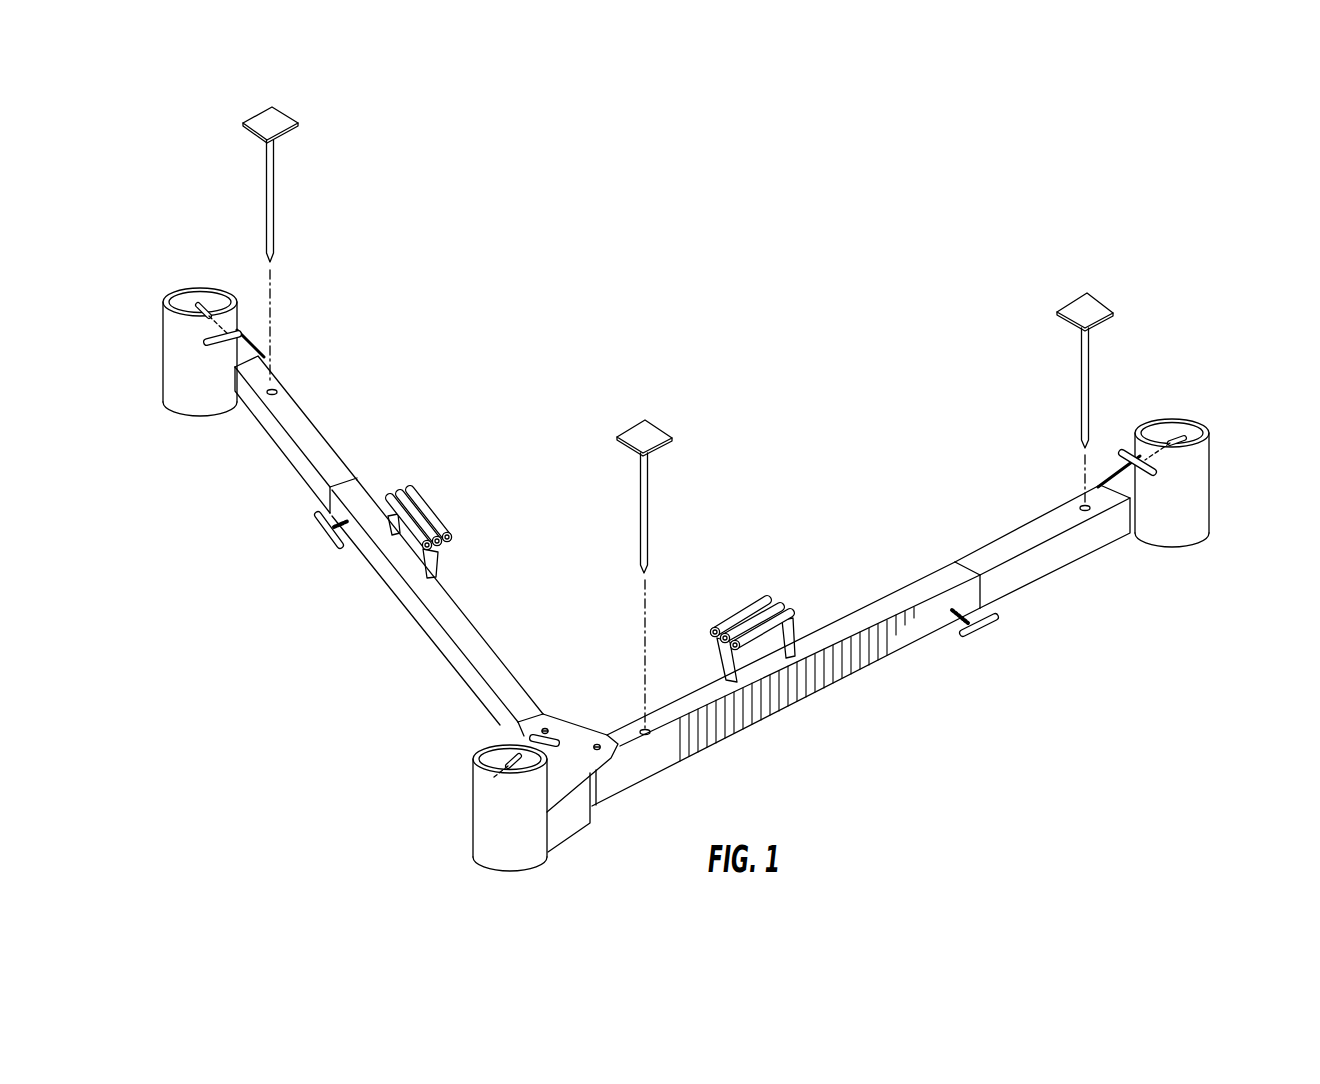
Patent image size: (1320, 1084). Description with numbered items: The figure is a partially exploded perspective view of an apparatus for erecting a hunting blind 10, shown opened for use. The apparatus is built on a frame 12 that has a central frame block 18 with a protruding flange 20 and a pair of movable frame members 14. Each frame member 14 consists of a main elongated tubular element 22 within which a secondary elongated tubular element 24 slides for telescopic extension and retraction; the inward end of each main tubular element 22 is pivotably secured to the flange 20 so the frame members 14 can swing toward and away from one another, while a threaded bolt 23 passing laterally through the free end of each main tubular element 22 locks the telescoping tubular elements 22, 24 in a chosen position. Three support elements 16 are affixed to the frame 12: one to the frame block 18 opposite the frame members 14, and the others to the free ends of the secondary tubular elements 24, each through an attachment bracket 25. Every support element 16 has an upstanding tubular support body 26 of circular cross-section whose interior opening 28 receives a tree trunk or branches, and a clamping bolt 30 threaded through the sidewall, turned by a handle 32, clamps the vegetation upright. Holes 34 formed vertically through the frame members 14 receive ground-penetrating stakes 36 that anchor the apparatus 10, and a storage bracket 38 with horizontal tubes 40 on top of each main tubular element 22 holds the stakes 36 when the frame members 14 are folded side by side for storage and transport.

The apparatus for erecting a hunting blind 10 is at (778, 768).
The frame 12 is at (489, 732).
The movable frame member 14 is at (430, 654).
The support element 16 is at (190, 416).
The central frame block 18 is at (570, 815).
The protruding flange 20 is at (580, 744).
The main elongated tubular element 22 is at (487, 657).
The threaded bolt 23 is at (340, 548).
The secondary elongated tubular element 24 is at (312, 440).
The attachment bracket 25 is at (255, 345).
The tubular support body 26 is at (205, 385).
The interior opening 28 is at (218, 300).
The clamping bolt 30 is at (208, 310).
The handle 32 is at (200, 340).
The hole 34 is at (278, 392).
The ground-penetrating stake 36 is at (266, 192).
The storage bracket 38 is at (437, 560).
The tube 40 is at (450, 538).